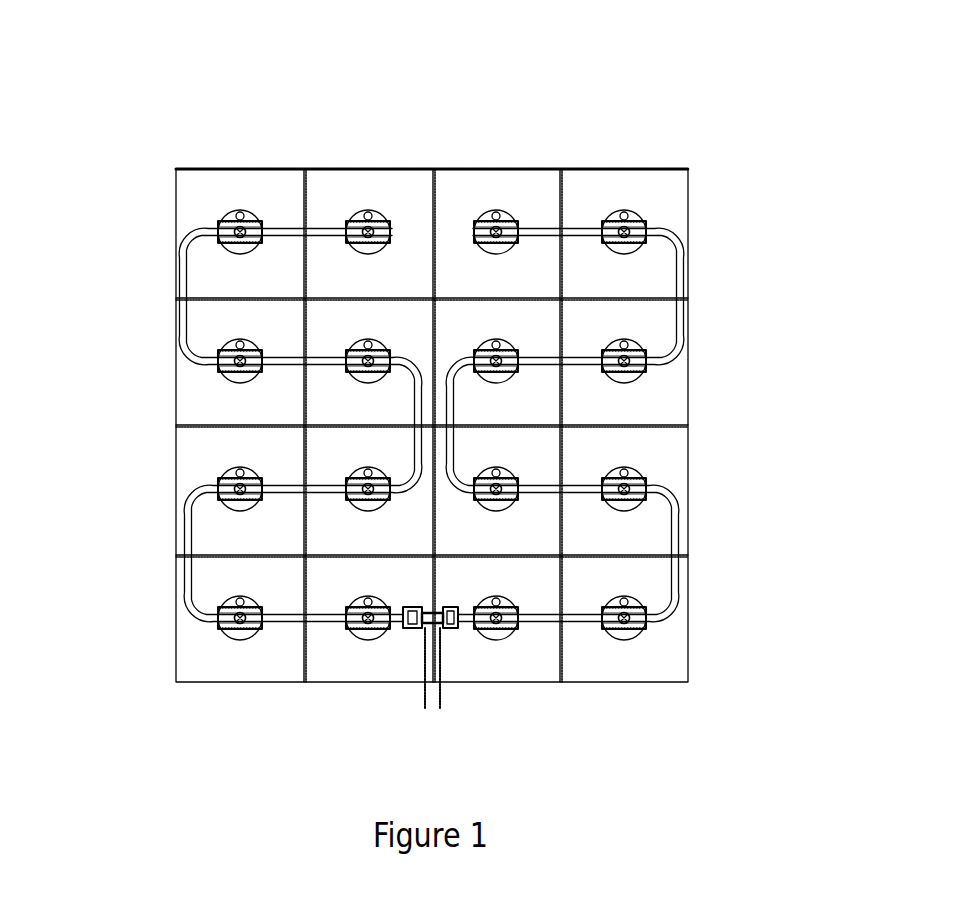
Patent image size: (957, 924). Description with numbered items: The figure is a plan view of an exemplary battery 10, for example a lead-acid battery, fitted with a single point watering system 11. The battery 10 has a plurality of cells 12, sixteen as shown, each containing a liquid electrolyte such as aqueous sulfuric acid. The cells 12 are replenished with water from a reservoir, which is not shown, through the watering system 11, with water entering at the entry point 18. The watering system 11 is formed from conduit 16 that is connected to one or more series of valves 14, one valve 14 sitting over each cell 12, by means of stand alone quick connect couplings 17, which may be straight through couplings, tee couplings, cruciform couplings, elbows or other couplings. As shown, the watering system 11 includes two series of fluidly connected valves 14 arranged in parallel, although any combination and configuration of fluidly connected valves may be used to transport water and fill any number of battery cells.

The battery 10 is at (625, 153).
The single point watering system 11 is at (793, 154).
The cells 12 is at (510, 183).
The valves 14 is at (231, 221).
The conduit 16 is at (193, 527).
The stand alone quick connect couplings 17 is at (408, 636).
The entry point 18 is at (453, 718).